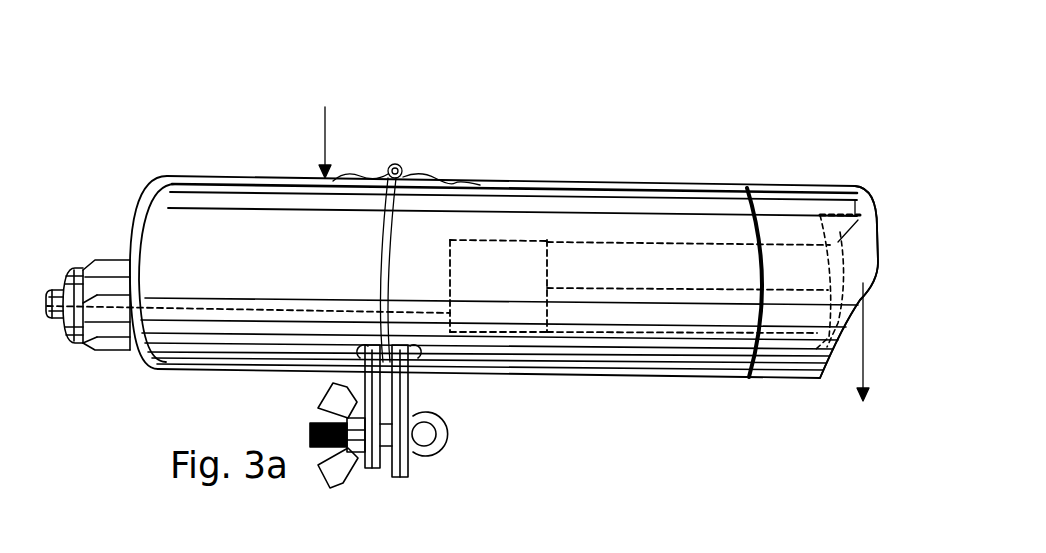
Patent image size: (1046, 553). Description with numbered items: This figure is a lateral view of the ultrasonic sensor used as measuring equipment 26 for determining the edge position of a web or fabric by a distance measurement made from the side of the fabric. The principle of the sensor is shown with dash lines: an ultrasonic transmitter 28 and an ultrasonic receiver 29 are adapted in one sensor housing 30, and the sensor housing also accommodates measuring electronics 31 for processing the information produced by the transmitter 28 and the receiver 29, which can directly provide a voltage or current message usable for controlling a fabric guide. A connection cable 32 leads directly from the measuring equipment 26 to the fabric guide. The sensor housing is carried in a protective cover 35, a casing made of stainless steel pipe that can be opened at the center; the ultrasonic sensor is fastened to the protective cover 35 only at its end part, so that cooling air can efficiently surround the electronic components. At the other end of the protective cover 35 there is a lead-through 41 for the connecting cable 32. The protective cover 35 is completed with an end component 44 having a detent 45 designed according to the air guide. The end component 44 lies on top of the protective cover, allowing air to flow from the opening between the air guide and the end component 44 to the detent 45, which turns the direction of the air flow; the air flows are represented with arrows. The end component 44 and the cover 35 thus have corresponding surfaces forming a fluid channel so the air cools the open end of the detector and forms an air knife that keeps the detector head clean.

The measuring equipment 26 is at (517, 228).
The ultrasonic transmitter 28 is at (680, 267).
The ultrasonic receiver 29 is at (668, 313).
The sensor housing 30 is at (597, 243).
The measuring electronics 31 is at (493, 283).
The connection cable 32 is at (50, 288).
The protective cover 35 is at (265, 245).
The lead-through 41 is at (83, 342).
The end component 44 is at (810, 187).
The detent 45 is at (878, 232).